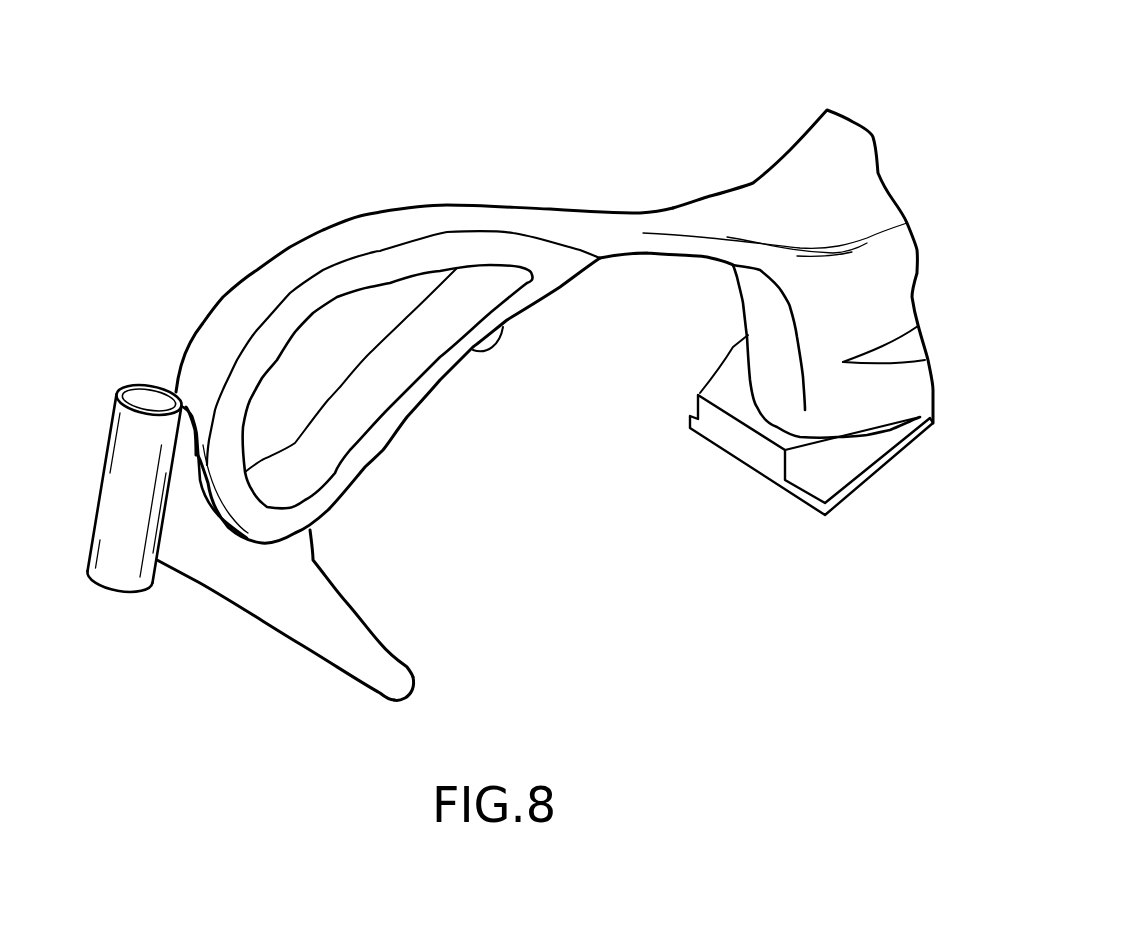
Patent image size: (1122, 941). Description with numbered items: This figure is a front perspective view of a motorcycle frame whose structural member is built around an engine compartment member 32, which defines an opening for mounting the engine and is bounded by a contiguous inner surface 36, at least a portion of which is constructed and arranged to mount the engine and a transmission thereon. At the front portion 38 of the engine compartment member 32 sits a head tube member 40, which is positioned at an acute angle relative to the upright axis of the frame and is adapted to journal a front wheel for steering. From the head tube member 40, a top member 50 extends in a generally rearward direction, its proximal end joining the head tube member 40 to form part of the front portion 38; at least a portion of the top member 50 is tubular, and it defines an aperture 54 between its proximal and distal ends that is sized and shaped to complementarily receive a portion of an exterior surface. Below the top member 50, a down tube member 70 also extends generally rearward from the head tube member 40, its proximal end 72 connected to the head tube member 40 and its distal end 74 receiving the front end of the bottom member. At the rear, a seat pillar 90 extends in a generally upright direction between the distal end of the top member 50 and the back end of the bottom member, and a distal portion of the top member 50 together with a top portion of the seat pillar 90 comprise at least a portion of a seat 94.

The engine compartment member 32 is at (455, 205).
The contiguous inner surface 36 is at (657, 262).
The front portion 38 is at (203, 585).
The head tube member 40 is at (118, 468).
The top member 50 is at (560, 293).
The aperture 54 is at (314, 396).
The down tube member 70 is at (360, 610).
The proximal end 72 is at (239, 602).
The distal end 74 is at (413, 683).
The seat pillar 90 is at (748, 331).
The seat 94 is at (752, 187).